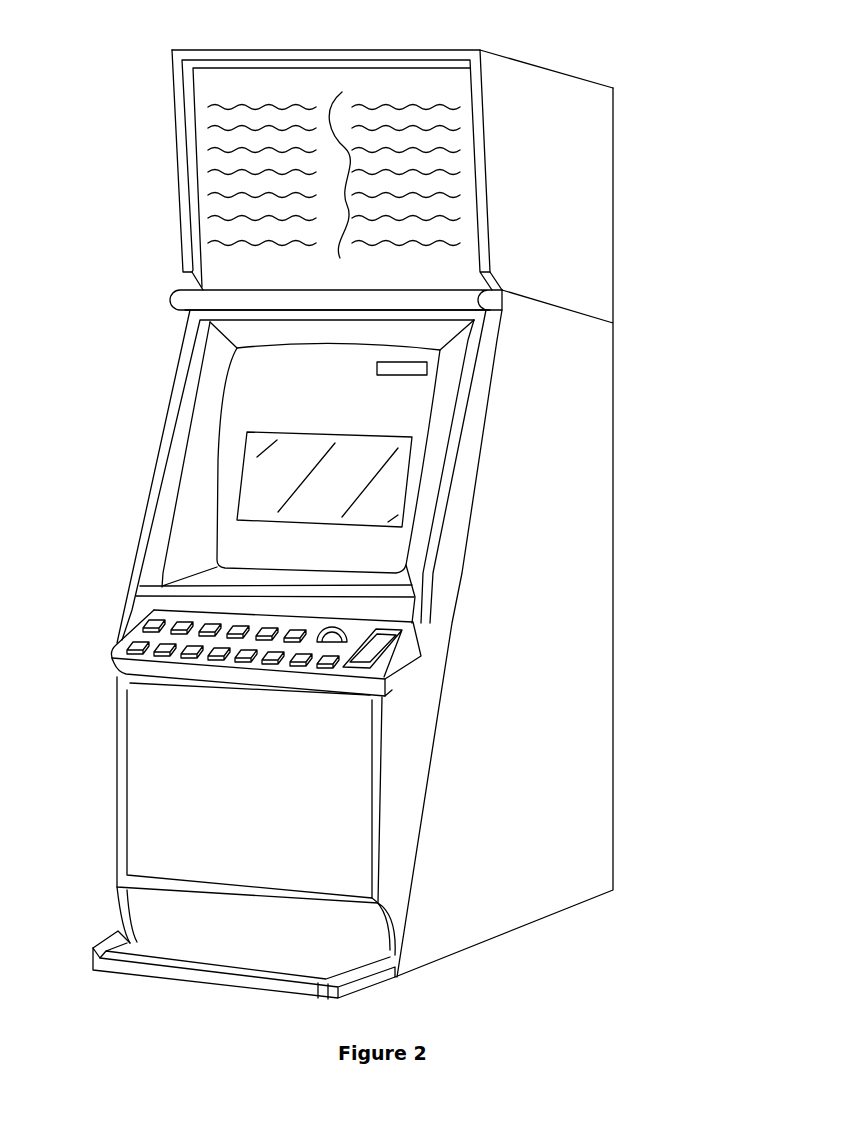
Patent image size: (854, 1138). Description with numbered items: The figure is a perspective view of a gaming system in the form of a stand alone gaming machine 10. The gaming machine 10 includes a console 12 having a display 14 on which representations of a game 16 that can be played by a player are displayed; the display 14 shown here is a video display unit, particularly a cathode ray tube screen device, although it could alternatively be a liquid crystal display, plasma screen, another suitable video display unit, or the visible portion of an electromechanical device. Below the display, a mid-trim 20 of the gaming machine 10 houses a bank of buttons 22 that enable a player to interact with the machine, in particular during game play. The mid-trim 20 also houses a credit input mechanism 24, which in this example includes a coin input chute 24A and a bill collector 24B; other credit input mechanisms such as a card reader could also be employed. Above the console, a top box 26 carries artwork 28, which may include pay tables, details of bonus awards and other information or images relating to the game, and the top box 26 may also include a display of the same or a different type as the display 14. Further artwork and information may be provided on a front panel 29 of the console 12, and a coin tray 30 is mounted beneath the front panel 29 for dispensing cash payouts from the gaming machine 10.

The gaming machine 10 is at (594, 62).
The console 12 is at (580, 490).
The display 14 is at (218, 534).
The game 16 is at (245, 484).
The mid-trim 20 is at (112, 656).
The bank of buttons 22 is at (184, 663).
The credit input mechanism 24 is at (400, 656).
The coin input chute 24A is at (345, 628).
The bill collector 24B is at (361, 660).
The top box 26 is at (183, 201).
The artwork 28 is at (221, 110).
The front panel 29 is at (150, 825).
The coin tray 30 is at (93, 963).